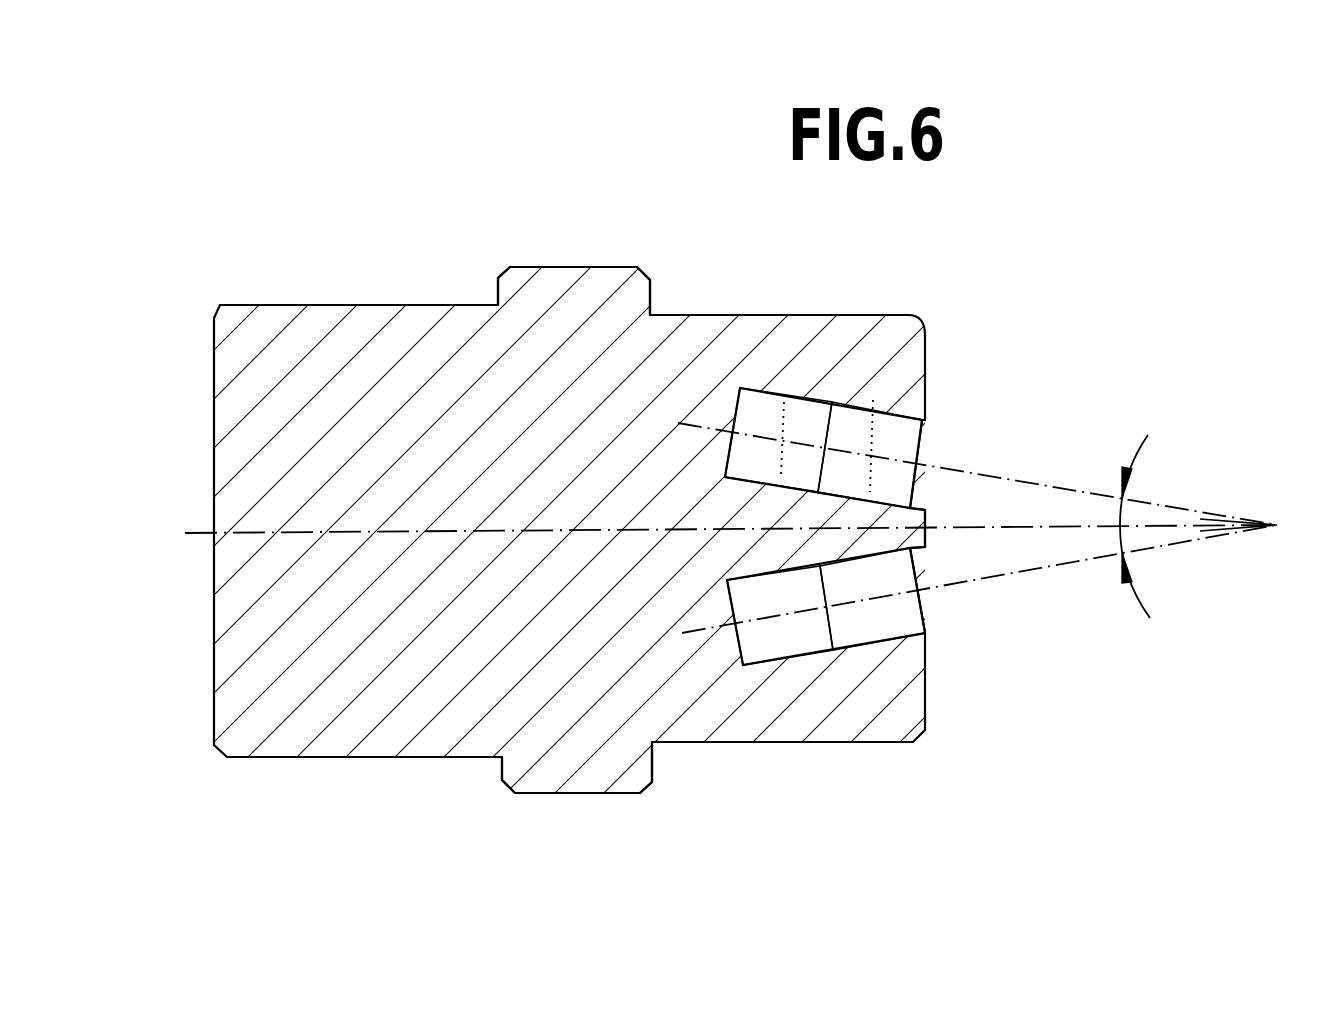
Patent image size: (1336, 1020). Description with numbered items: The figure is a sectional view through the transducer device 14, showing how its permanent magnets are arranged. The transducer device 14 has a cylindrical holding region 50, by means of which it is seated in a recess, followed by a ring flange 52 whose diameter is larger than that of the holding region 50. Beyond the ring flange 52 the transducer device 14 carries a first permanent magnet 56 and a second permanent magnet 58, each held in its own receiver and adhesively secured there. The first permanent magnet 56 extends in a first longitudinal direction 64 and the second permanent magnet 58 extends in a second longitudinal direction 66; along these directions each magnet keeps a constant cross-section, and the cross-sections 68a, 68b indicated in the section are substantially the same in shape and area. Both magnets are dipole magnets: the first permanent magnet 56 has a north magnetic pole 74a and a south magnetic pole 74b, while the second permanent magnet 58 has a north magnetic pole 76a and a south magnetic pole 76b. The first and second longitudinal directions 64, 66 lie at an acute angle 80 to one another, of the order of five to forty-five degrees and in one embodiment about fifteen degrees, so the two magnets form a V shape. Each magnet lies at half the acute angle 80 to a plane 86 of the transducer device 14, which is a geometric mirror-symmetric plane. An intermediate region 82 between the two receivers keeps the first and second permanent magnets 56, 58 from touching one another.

The transducer device 14 is at (437, 262).
The holding region 50 is at (332, 306).
The ring flange 52 is at (570, 276).
The first permanent magnet 56 is at (926, 350).
The second permanent magnet 58 is at (880, 627).
The first longitudinal direction 64 is at (1077, 488).
The second longitudinal direction 66 is at (1082, 563).
The cross-section 68a is at (870, 400).
The cross-section 68b is at (785, 385).
The north magnetic pole 74a is at (747, 407).
The south magnetic pole 74b is at (913, 434).
The north magnetic pole 76a is at (910, 618).
The south magnetic pole 76b is at (753, 653).
The acute angle 80 is at (1168, 533).
The intermediate region 82 is at (915, 535).
The plane 86 is at (255, 531).